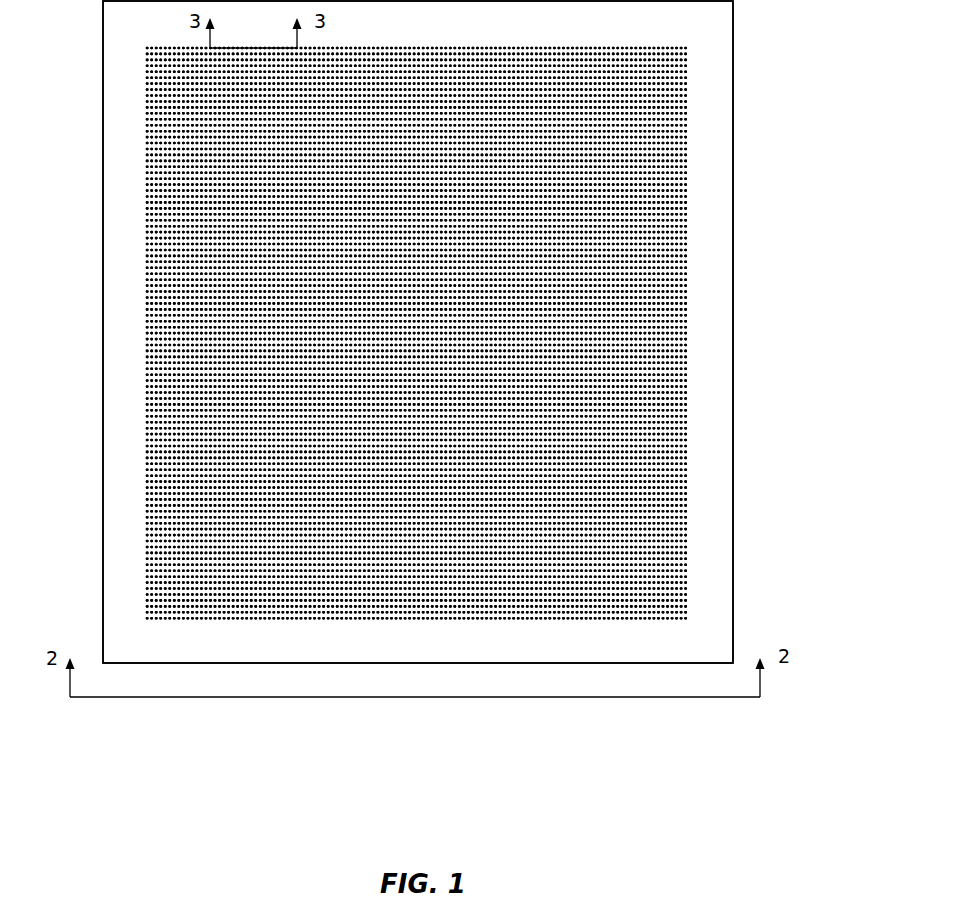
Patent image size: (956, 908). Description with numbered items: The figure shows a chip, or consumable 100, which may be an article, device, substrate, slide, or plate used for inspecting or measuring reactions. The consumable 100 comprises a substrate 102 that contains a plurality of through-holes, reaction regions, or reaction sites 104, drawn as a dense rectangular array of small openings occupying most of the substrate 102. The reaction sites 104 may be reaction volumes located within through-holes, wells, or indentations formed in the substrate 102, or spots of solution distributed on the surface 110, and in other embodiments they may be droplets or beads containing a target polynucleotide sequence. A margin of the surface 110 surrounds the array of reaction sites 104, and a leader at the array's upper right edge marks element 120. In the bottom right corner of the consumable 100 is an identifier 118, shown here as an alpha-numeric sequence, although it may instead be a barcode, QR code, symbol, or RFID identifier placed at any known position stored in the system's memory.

The consumable 100 is at (100, 124).
The substrate 102 is at (103, 393).
The reaction sites 104 is at (661, 270).
The surface 110 is at (123, 325).
The identifier 118 is at (690, 647).
The perforation pattern edge 120 is at (692, 110).